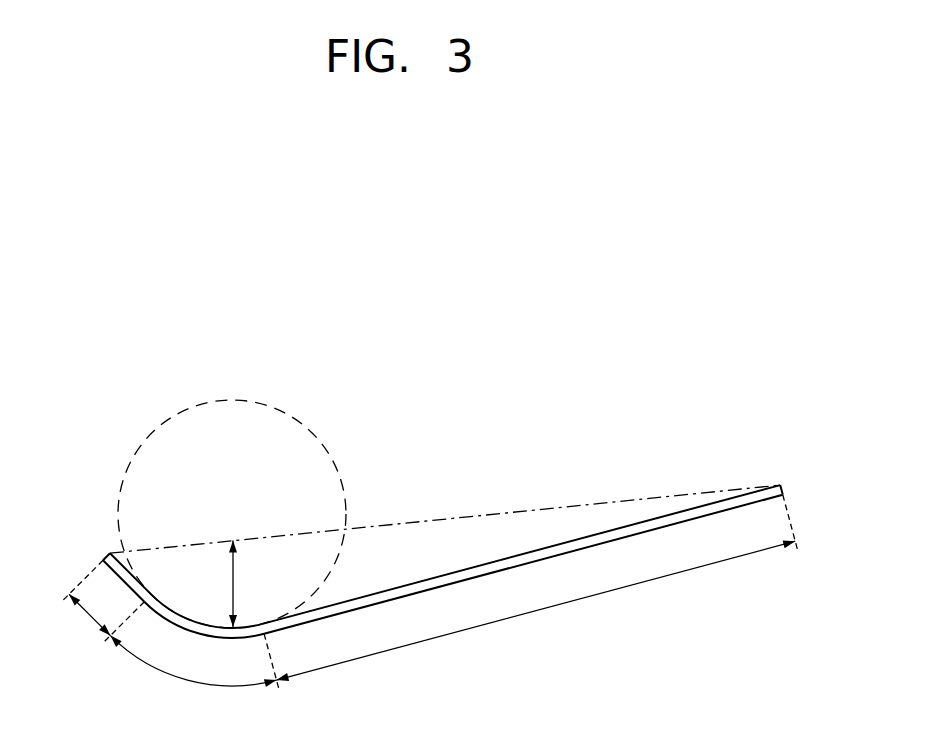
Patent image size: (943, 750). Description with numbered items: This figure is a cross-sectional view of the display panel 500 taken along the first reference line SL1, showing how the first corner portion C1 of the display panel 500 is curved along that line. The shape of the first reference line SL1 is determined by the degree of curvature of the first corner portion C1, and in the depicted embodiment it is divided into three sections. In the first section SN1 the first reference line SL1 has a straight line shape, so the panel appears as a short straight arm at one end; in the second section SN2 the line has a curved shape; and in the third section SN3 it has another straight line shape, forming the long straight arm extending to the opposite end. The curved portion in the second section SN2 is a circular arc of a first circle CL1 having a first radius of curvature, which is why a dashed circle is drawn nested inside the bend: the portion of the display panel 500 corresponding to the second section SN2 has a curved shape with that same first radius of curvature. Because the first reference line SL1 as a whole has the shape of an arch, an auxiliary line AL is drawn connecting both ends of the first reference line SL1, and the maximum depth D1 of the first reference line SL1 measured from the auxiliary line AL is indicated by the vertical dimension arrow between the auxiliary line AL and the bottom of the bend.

The display panel 500 is at (448, 544).
The first reference line SL1 is at (625, 525).
The first corner portion C1 is at (107, 556).
The first circle CL1 is at (317, 436).
The auxiliary line AL is at (447, 517).
The maximum depth D1 is at (246, 584).
The first section SN1 is at (98, 601).
The second section SN2 is at (194, 671).
The third section SN3 is at (537, 588).